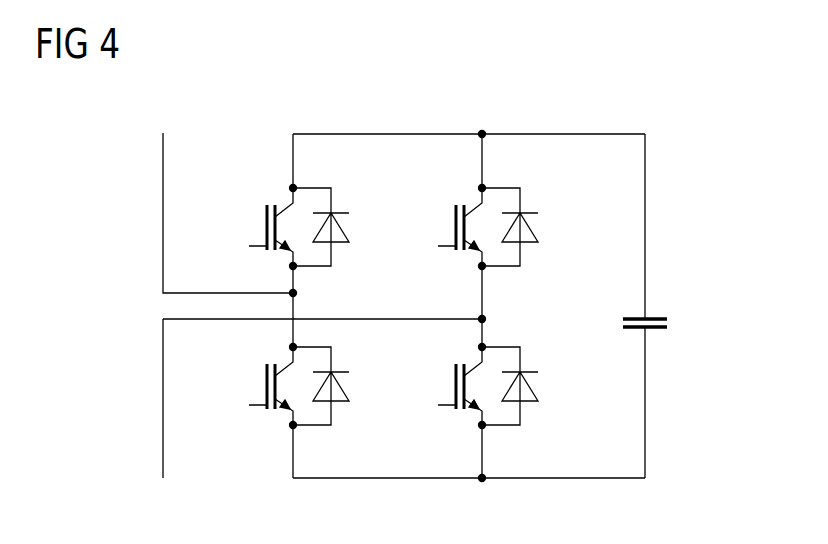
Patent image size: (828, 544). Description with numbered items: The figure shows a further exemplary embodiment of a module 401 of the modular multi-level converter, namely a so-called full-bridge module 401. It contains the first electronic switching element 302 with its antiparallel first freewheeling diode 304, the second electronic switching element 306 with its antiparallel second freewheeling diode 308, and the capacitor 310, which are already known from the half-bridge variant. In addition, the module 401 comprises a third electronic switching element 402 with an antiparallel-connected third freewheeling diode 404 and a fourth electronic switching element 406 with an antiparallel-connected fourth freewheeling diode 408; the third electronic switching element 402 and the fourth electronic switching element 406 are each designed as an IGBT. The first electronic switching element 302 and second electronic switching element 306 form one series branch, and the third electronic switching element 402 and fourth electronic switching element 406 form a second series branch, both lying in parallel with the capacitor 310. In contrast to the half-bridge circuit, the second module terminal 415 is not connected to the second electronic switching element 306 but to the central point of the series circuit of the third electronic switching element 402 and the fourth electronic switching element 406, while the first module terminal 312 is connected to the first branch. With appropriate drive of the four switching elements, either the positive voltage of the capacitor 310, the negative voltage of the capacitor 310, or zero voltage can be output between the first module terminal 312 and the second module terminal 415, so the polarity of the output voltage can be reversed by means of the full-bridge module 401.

The module 401 is at (655, 92).
The first module terminal 312 is at (163, 178).
The second module terminal 415 is at (163, 431).
The first electronic switching element 302 is at (267, 218).
The first freewheeling diode 304 is at (349, 223).
The third electronic switching element 402 is at (454, 222).
The third freewheeling diode 404 is at (530, 226).
The second electronic switching element 306 is at (267, 377).
The second freewheeling diode 308 is at (349, 382).
The fourth electronic switching element 406 is at (454, 381).
The fourth freewheeling diode 408 is at (530, 385).
The capacitor 310 is at (650, 316).